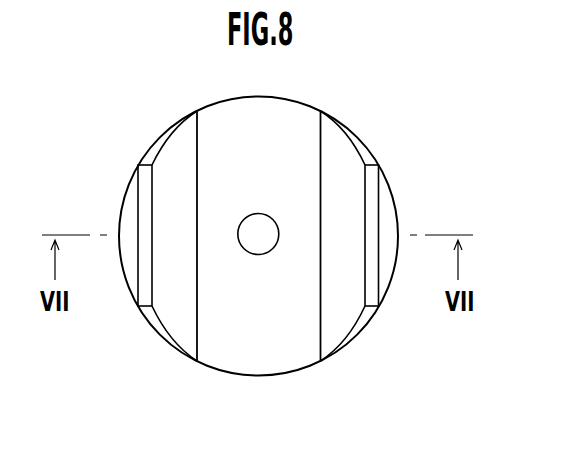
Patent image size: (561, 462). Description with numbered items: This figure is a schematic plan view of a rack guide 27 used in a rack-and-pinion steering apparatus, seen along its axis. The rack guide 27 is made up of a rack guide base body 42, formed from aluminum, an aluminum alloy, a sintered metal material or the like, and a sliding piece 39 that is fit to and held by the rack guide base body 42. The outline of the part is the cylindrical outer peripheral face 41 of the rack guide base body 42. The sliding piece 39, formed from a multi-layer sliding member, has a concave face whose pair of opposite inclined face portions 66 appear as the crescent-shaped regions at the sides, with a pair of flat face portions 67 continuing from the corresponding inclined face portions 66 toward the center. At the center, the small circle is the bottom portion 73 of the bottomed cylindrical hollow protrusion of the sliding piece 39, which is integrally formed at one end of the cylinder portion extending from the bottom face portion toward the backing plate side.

The rack guide 27 is at (365, 135).
The sliding piece 39 is at (217, 328).
The cylindrical outer peripheral face 41 is at (397, 200).
The rack guide base body 42 is at (130, 217).
The inclined face portions 66 is at (180, 170).
The flat face portions 67 is at (217, 275).
The bottom portion 73 is at (257, 245).